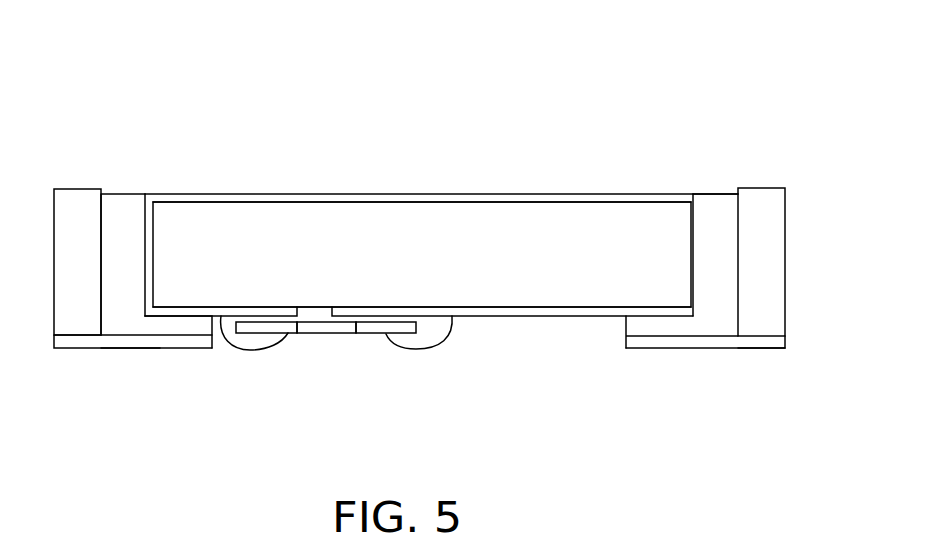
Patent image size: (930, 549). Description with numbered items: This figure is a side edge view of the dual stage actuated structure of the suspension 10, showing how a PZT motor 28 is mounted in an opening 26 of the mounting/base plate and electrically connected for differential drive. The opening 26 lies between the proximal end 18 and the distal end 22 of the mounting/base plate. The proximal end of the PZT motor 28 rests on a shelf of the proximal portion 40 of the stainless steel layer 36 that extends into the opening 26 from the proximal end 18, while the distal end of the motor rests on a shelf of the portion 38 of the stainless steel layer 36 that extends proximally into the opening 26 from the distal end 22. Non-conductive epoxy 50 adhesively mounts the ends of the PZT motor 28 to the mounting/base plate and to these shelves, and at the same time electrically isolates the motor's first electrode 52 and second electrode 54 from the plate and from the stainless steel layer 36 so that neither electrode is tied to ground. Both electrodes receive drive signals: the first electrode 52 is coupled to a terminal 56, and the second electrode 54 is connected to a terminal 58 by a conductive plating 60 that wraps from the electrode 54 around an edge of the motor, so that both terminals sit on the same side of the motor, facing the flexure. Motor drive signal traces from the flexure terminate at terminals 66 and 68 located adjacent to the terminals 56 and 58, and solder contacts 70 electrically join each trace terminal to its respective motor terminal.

The suspension 10 is at (487, 132).
The proximal end 18 is at (773, 253).
The distal end 22 is at (53, 267).
The opening 26 is at (520, 348).
The PZT motor 28 is at (548, 282).
The stainless steel layer 36 is at (53, 340).
The portion of stainless steel layer 38 is at (128, 348).
The proximal portion 40 is at (783, 338).
The non-conductive epoxy 50 is at (115, 194).
The first electrode 52 is at (603, 317).
The second electrode 54 is at (208, 197).
The terminal 56 is at (418, 309).
The terminal 58 is at (260, 308).
The conductive plating 60 is at (142, 220).
The terminal 66 is at (397, 333).
The terminal 68 is at (267, 333).
The solder contact 70 is at (232, 348).